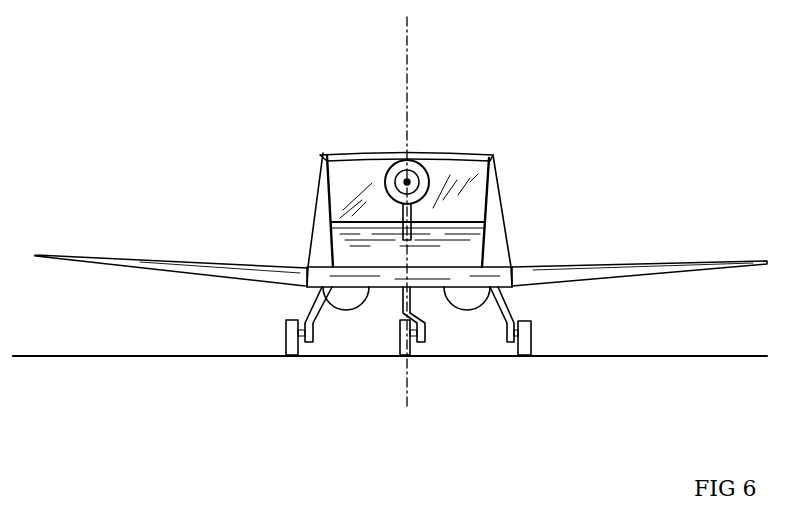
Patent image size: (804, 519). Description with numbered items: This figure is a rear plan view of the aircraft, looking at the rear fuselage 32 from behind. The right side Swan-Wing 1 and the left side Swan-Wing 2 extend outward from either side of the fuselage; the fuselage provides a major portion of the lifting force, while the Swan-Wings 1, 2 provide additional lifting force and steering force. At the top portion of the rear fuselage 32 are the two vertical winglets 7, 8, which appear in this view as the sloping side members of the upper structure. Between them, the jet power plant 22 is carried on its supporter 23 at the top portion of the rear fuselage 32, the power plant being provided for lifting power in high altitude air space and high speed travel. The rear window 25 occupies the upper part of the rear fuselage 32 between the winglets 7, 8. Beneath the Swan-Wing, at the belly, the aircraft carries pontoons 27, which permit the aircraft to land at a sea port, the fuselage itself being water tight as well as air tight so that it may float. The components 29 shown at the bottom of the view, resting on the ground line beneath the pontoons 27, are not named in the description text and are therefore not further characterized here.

The right side Swan-Wing 1 is at (668, 265).
The left side Swan-Wing 2 is at (170, 262).
The vertical winglet 7 is at (488, 198).
The vertical winglet 8 is at (328, 207).
The jet power plant 22 is at (420, 168).
The supporter 23 is at (402, 213).
The rear window 25 is at (493, 157).
The pontoon 27 is at (342, 313).
The landing gear 29 is at (283, 340).
The rear fuselage 32 is at (466, 254).